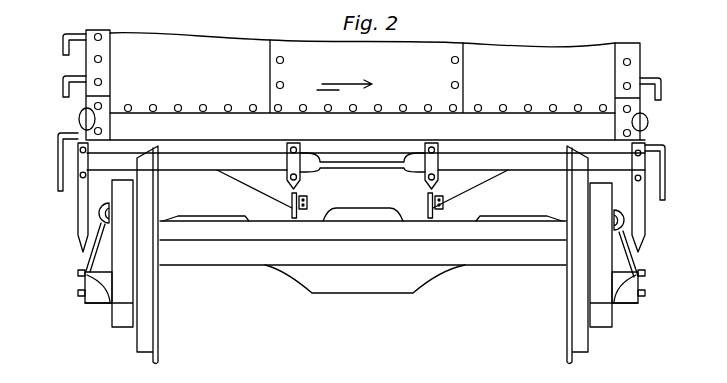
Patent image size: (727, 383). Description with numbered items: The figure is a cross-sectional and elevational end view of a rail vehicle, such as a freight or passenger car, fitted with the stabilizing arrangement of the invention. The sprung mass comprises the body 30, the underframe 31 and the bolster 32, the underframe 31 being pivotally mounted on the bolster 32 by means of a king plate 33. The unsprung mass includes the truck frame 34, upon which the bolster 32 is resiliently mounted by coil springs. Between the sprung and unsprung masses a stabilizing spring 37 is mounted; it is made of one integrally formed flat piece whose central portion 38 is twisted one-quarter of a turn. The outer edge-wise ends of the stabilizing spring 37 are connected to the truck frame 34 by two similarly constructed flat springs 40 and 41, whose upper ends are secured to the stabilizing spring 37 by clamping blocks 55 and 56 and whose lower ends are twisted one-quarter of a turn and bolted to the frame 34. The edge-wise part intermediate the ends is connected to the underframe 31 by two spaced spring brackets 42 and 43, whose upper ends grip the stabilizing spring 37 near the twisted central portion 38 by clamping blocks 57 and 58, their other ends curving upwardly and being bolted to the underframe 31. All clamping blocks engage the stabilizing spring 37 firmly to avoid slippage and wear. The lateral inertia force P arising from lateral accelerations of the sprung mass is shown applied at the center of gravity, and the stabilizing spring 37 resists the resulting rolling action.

The body 30 is at (374, 73).
The underframe 31 is at (486, 178).
The bolster 32 is at (418, 283).
The king plate 33 is at (346, 219).
The truck frame 34 is at (118, 318).
The stabilizing spring 37 is at (178, 166).
The twisted central portion 38 is at (351, 166).
The flat spring 40 is at (80, 209).
The flat spring 41 is at (644, 231).
The spring bracket 42 is at (292, 206).
The spring bracket 43 is at (428, 204).
The clamping block 55 is at (81, 161).
The clamping block 56 is at (645, 173).
The clamping block 57 is at (290, 170).
The clamping block 58 is at (438, 167).